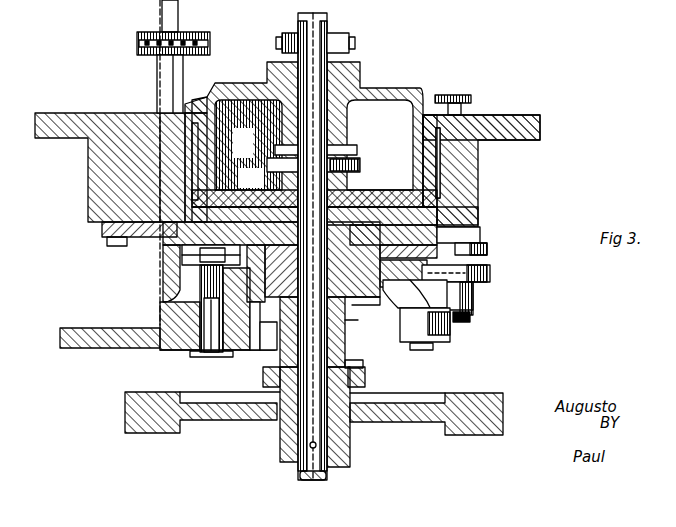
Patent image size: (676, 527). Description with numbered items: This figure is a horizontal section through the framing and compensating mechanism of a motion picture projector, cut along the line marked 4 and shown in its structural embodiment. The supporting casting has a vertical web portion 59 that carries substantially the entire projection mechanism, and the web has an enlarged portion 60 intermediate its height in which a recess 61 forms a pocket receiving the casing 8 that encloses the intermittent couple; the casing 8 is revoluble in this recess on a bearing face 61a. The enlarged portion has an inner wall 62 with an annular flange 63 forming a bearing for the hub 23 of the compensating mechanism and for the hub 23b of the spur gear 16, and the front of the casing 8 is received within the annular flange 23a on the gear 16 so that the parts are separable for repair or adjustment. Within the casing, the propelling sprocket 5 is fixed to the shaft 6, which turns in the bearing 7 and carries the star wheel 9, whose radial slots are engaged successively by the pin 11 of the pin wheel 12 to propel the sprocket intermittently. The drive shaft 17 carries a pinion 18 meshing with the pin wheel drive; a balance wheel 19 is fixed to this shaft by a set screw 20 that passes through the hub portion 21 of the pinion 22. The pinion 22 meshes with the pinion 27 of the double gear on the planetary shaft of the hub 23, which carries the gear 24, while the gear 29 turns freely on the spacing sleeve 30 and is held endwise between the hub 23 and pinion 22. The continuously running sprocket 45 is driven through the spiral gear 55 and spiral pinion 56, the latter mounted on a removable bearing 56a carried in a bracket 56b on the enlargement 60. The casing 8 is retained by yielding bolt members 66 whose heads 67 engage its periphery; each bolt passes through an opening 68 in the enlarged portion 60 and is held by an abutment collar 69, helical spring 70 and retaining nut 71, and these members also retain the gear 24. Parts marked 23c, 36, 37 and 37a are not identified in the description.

The section line 4 is at (473, 9).
The propelling sprocket 5 is at (290, 30).
The shaft 6 is at (337, 34).
The bearing 7 is at (358, 70).
The casing 8 is at (380, 108).
The star wheel 9 is at (352, 152).
The pin 11 is at (283, 127).
The pin wheel 12 is at (362, 166).
The spur gear 16 is at (470, 196).
The drive shaft 17 is at (366, 368).
The pinion 18 is at (311, 182).
The balance wheel 19 is at (498, 394).
The set screw 20 is at (343, 447).
The hub portion 21 is at (300, 470).
The pinion 22 is at (279, 400).
The hub 23 is at (363, 318).
The annular flange 23a is at (440, 150).
The hub 23b is at (350, 196).
The ring 23c is at (246, 352).
The gear 24 is at (470, 302).
The pinion 27 is at (367, 382).
The gear 29 is at (345, 336).
The spacing sleeve 30 is at (347, 352).
The nut 36 is at (434, 345).
The gear 37 is at (455, 325).
The hub 37a is at (433, 352).
The sprocket 45 is at (158, 14).
The spiral gear 55 is at (84, 330).
The spiral pinion 56 is at (165, 320).
The removable bearing 56a is at (188, 353).
The bracket 56b is at (182, 276).
The web portion 59 is at (543, 129).
The enlarged portion 60 is at (100, 194).
The recess 61 is at (187, 150).
The bearing face 61a is at (193, 110).
The inner wall 62 is at (241, 158).
The annular flange 63 is at (228, 217).
The bolt member 66 is at (466, 94).
The head 67 is at (444, 94).
The opening 68 is at (480, 217).
The abutment collar 69 is at (488, 240).
The helical spring 70 is at (491, 270).
The retaining nut 71 is at (474, 292).